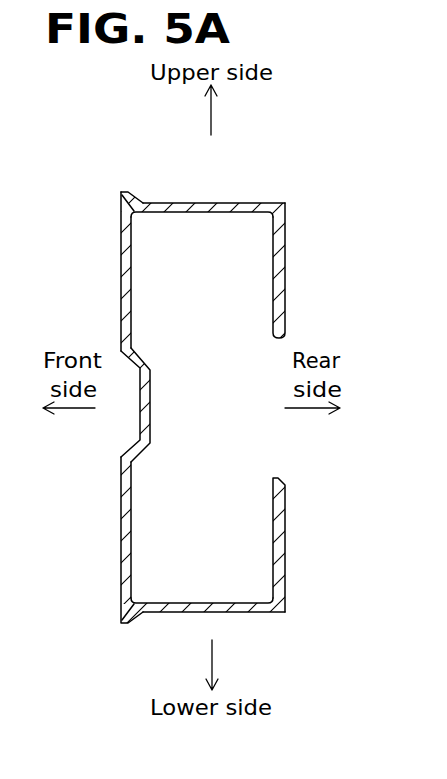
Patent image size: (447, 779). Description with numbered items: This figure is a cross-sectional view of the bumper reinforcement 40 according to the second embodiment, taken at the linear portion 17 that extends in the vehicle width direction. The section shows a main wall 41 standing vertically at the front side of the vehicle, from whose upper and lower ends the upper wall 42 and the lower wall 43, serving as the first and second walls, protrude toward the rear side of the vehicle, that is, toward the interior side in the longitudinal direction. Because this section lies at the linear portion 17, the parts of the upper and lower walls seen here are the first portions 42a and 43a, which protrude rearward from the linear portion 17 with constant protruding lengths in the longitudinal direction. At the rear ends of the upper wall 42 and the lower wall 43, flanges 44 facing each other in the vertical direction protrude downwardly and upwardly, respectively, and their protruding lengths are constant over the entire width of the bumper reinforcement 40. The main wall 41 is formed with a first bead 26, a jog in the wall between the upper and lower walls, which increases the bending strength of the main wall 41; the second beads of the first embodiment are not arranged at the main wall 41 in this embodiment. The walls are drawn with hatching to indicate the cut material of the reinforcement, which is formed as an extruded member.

The bumper reinforcement 40 is at (328, 200).
The main wall 41 is at (122, 269).
The upper wall 42 is at (202, 214).
The first portion of the upper wall 42a is at (173, 201).
The linear portion 17 is at (212, 203).
The lower wall 43 is at (202, 600).
The first portion of the lower wall 43a is at (190, 613).
The flanges 44 is at (283, 285).
The first bead 26 is at (136, 406).